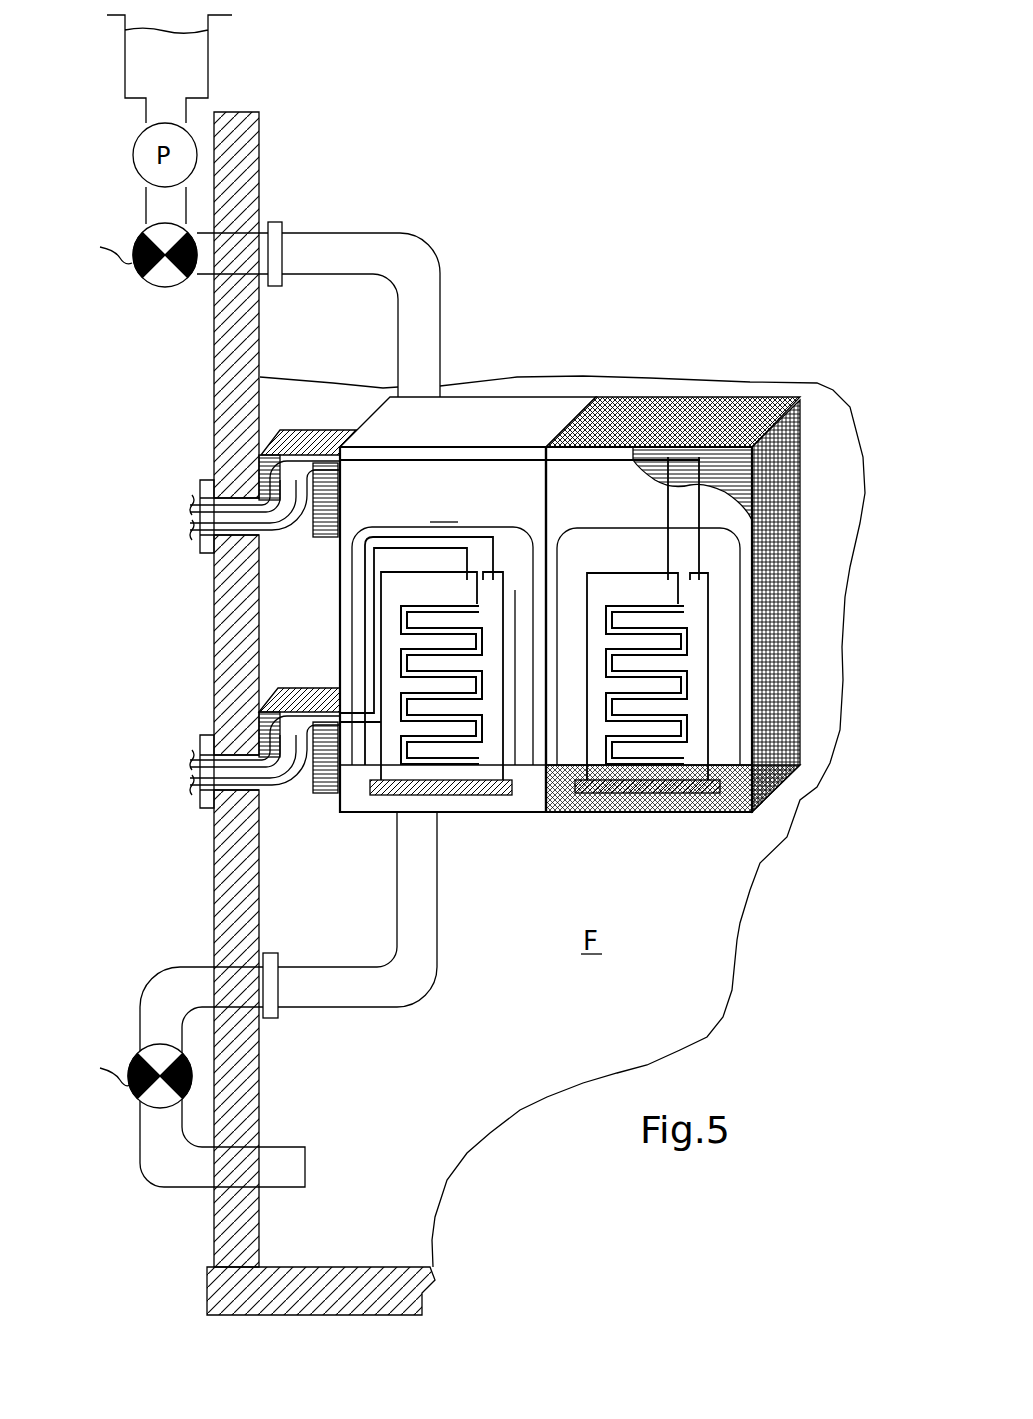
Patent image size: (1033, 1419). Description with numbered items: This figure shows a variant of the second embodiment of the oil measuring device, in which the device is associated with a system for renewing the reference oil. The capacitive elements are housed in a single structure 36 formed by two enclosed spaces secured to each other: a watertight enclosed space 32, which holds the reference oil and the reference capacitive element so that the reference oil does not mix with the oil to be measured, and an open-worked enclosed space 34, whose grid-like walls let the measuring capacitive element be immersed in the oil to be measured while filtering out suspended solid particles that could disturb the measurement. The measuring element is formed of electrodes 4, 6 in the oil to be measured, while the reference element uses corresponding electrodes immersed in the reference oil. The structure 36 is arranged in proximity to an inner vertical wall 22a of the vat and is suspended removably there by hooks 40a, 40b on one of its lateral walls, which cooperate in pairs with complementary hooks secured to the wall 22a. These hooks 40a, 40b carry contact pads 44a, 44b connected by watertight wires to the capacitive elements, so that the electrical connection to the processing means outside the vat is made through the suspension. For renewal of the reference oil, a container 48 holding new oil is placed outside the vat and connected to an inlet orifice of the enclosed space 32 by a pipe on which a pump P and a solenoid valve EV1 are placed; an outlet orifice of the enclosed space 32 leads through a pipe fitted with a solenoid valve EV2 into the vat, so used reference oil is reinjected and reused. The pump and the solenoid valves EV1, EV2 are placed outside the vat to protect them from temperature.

The container 48 is at (208, 68).
The solenoid valve EV1 is at (123, 255).
The solenoid valve EV2 is at (121, 1076).
The inner vertical wall 22a is at (228, 918).
The hook 40a is at (268, 438).
The contact pad 44a is at (297, 535).
The hook 40b is at (268, 693).
The contact pad 44b is at (297, 793).
The structure 36 is at (579, 581).
The enclosed space 32 is at (468, 408).
The open-worked enclosed space 34 is at (540, 307).
The electrode 4 is at (580, 752).
The electrode 6 is at (718, 748).